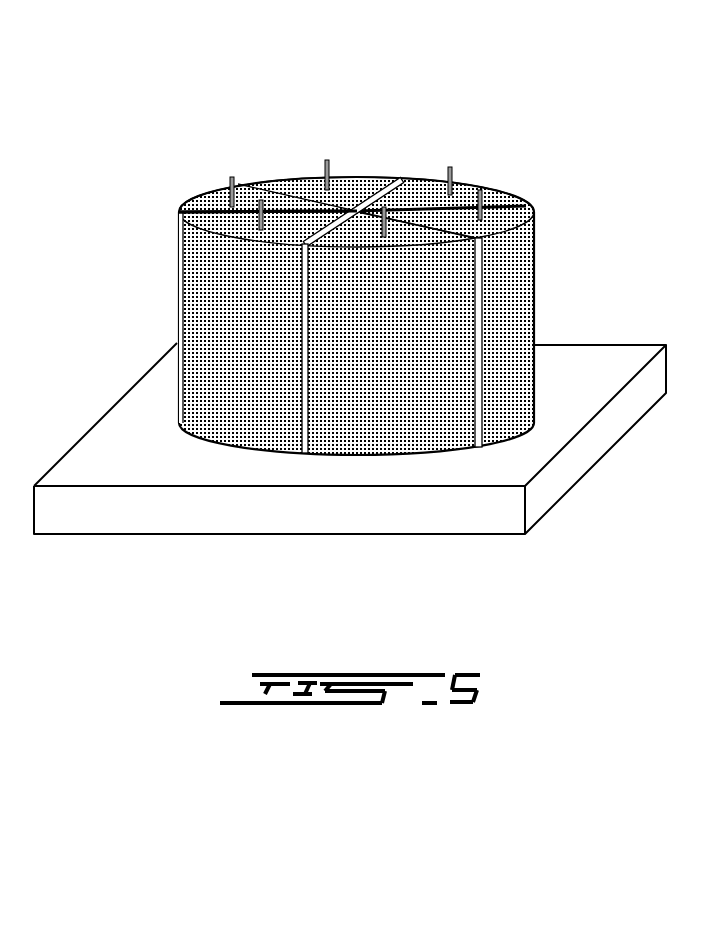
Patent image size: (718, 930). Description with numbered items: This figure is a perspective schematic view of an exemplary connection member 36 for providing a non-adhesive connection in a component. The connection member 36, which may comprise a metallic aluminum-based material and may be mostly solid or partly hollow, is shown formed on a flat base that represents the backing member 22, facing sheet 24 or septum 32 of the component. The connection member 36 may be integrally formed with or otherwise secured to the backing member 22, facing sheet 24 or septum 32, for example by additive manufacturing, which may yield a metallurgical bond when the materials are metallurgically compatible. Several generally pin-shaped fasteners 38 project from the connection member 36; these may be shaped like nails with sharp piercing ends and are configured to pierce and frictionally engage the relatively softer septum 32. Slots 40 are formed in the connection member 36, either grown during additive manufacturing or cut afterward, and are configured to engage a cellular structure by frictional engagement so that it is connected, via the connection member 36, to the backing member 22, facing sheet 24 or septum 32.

The backing member 22 is at (350, 476).
The facing sheet 24 is at (350, 476).
The septum 32 is at (442, 513).
The connection member 36 is at (520, 240).
The fasteners 38 is at (232, 177).
The slots 40 is at (402, 182).